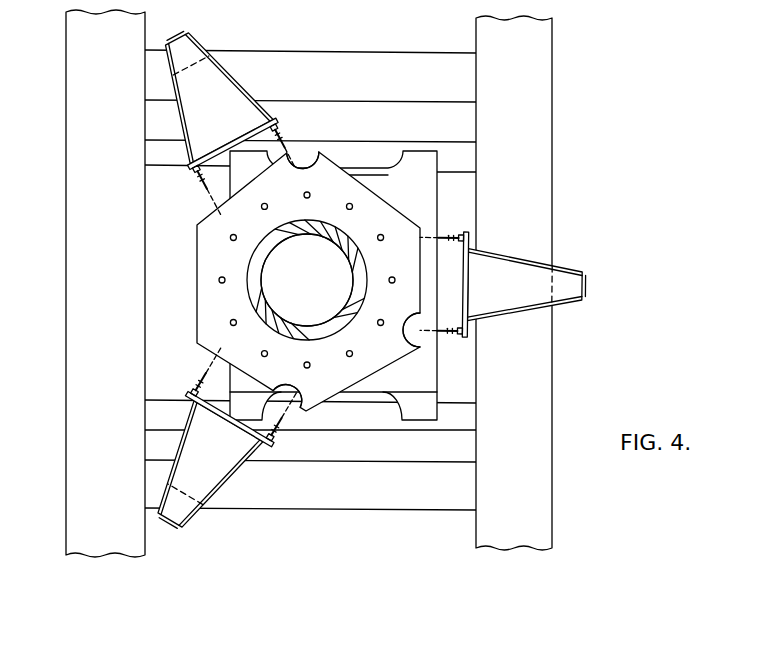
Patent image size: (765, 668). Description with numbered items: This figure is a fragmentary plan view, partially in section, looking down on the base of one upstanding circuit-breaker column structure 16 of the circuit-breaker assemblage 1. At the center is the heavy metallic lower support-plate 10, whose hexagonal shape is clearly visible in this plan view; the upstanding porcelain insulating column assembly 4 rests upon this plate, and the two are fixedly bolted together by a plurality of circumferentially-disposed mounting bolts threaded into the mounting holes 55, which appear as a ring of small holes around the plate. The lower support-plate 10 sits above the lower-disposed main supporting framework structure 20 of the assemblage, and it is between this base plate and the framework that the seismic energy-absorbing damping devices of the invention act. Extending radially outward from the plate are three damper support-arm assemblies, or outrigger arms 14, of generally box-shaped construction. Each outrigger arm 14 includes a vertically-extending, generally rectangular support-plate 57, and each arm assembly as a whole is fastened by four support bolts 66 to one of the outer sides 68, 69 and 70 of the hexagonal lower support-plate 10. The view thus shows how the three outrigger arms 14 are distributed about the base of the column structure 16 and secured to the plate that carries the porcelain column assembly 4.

The circuit-breaker assemblage 1 is at (46, 108).
The porcelain insulating column assembly 4 is at (252, 305).
The lower support-plate 10 is at (384, 206).
The outrigger arms 14 is at (222, 72).
The circuit-breaker column structure 16 is at (250, 287).
The main supporting framework structure 20 is at (427, 412).
The mounting holes 55 is at (261, 207).
The support-plate 57 is at (240, 143).
The support bolts 66 is at (273, 120).
The outer side of lower support-plate 68 is at (317, 157).
The outer side of lower support-plate 69 is at (297, 388).
The outer side of lower support-plate 70 is at (409, 344).